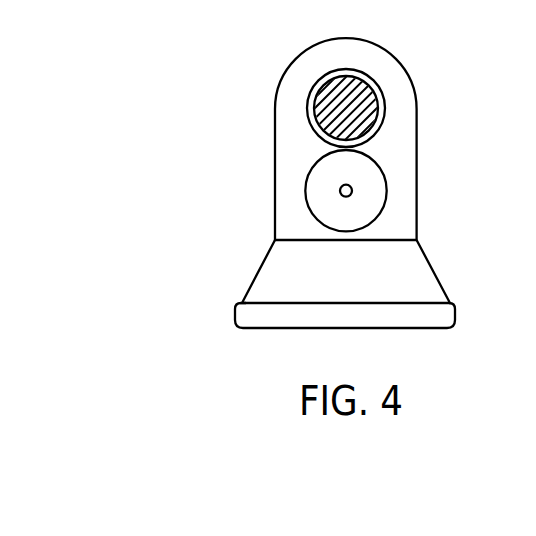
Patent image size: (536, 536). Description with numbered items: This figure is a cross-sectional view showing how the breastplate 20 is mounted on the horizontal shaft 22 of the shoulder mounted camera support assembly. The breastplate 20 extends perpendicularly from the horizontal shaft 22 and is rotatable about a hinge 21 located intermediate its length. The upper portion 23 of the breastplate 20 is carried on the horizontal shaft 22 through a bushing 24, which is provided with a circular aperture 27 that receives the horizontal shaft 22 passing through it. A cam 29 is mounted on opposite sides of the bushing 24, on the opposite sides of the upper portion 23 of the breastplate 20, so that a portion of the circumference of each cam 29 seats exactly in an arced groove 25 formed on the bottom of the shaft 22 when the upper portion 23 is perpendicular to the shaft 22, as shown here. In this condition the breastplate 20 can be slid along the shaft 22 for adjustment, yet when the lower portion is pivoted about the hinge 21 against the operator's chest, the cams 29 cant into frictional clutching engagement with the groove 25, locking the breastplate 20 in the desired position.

The breastplate 20 is at (297, 277).
The hinge 21 is at (435, 286).
The horizontal shaft 22 is at (328, 100).
The upper portion 23 is at (376, 56).
The bushing 24 is at (386, 100).
The groove 25 is at (372, 155).
The circular aperture 27 is at (309, 118).
The cam 29 is at (377, 193).